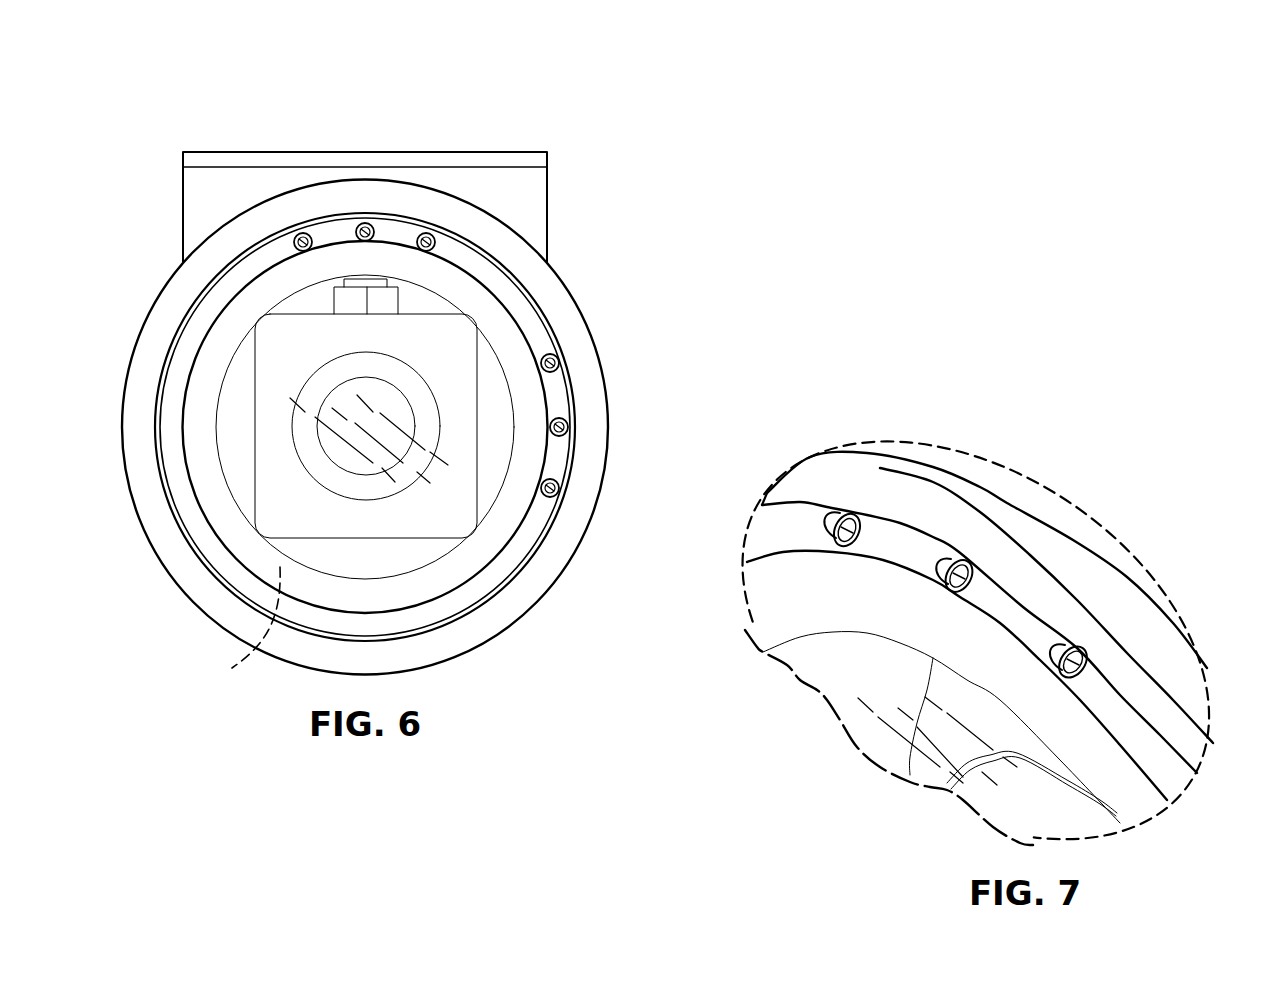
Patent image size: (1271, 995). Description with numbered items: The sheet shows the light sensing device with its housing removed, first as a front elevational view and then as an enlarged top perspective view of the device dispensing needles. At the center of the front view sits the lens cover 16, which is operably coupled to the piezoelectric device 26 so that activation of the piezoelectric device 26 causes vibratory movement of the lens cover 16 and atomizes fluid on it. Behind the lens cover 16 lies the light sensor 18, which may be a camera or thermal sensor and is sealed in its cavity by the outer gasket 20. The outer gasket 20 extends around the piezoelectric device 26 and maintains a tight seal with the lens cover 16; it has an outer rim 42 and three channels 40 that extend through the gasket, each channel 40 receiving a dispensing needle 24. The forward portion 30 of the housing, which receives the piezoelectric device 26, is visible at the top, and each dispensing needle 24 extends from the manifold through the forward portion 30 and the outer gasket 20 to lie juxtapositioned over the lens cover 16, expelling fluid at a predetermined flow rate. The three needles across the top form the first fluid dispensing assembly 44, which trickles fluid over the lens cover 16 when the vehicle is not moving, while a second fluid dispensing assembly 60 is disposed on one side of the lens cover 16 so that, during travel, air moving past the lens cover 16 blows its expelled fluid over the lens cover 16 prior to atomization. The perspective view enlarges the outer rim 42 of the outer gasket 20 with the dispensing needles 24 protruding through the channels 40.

In FIG. 6, the lens cover 16 is at (243, 398).
In FIG. 7, the lens cover 16 is at (843, 670).
In FIG. 6, the light sensor 18 is at (297, 458).
In FIG. 6, the outer gasket 20 is at (553, 295).
In FIG. 7, the outer gasket 20 is at (810, 477).
In FIG. 6, the dispensing needle 24 is at (295, 240).
In FIG. 7, the dispensing needle 24 is at (832, 528).
In FIG. 6, the piezoelectric device 26 is at (243, 624).
In FIG. 7, the piezoelectric device 26 is at (783, 612).
In FIG. 6, the forward portion 30 is at (200, 152).
In FIG. 6, the channel 40 is at (357, 228).
In FIG. 7, the channel 40 is at (860, 533).
In FIG. 6, the outer rim 42 is at (482, 577).
In FIG. 7, the outer rim 42 is at (783, 525).
In FIG. 6, the fluid dispensing assembly 44 is at (372, 137).
In FIG. 6, the second fluid dispensing assembly 60 is at (680, 339).